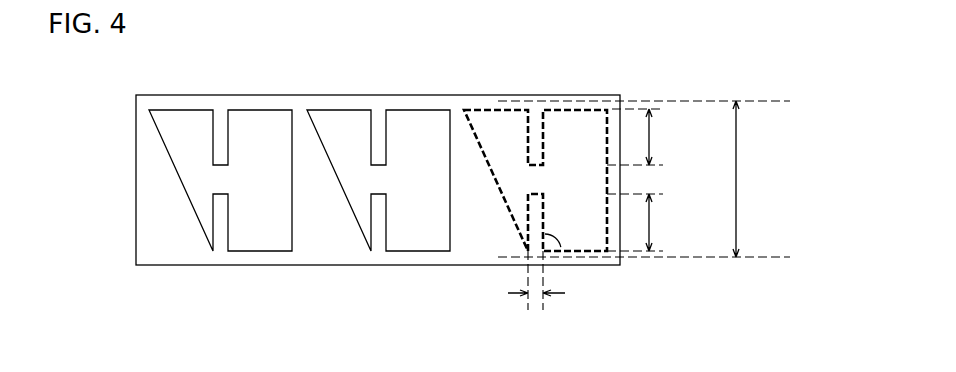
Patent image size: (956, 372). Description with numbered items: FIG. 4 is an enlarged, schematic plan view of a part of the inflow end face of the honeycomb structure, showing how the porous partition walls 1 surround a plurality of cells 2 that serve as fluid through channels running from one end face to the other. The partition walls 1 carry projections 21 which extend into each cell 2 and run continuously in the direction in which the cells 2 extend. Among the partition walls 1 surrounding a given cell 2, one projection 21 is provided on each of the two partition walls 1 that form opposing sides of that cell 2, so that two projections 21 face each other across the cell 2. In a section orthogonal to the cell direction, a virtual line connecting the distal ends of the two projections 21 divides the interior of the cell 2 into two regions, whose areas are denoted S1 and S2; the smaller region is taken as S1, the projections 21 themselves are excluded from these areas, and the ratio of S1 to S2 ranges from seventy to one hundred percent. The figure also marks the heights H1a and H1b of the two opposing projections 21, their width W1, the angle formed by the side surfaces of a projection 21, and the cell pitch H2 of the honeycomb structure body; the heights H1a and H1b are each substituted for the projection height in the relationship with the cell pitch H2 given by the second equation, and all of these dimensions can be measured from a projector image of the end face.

The partition wall 1 is at (460, 167).
The cell 2 is at (357, 180).
The projection 21 is at (377, 137).
The area of one region of the cell S1 is at (585, 137).
The area of the other region of the cell S2 is at (495, 198).
The height of the projection H1a is at (681, 222).
The height of the projection H1b is at (681, 137).
The cell pitch H2 is at (757, 179).
The width of the projection W1 is at (536, 314).